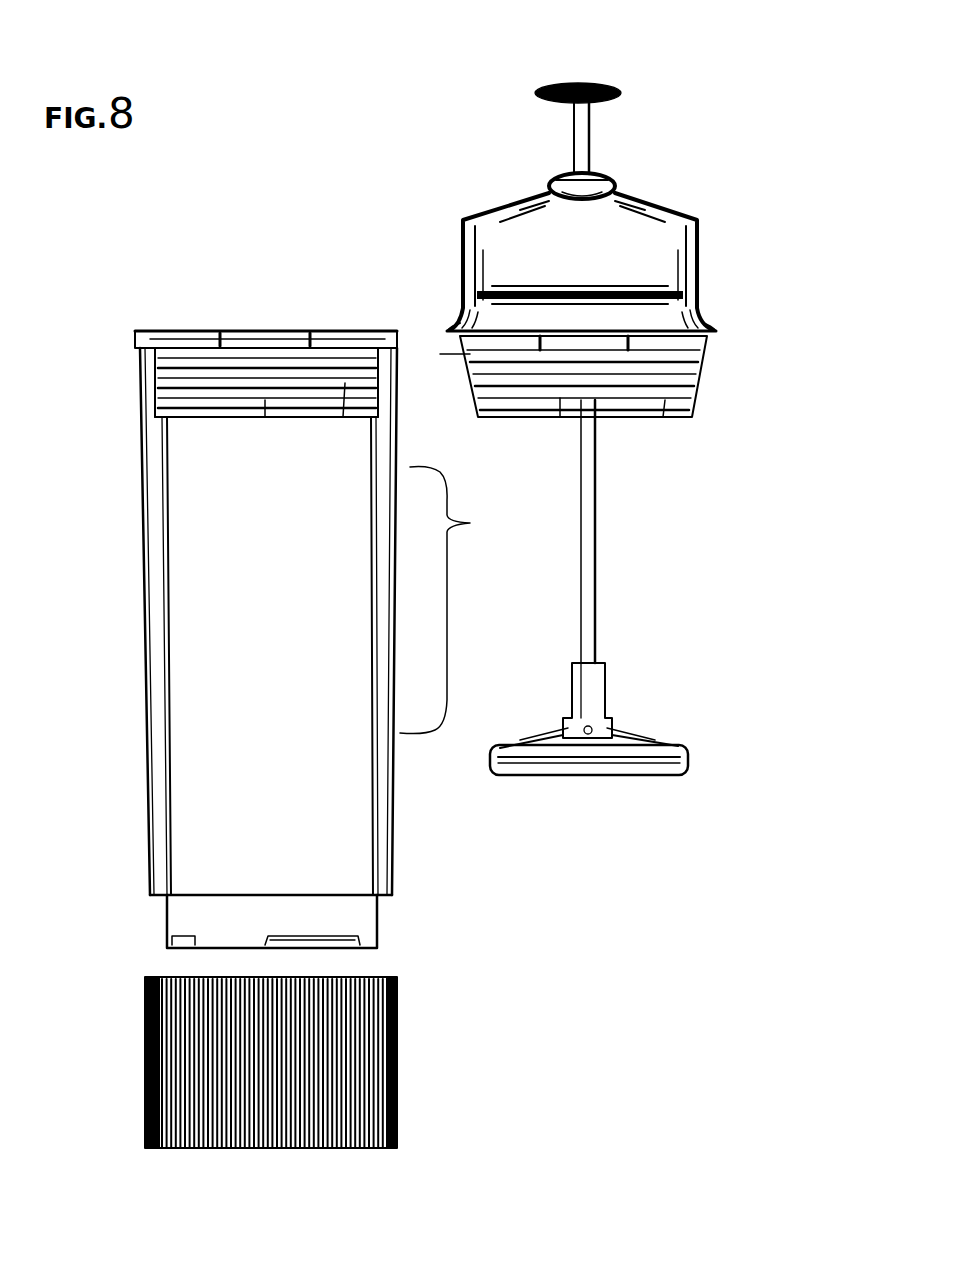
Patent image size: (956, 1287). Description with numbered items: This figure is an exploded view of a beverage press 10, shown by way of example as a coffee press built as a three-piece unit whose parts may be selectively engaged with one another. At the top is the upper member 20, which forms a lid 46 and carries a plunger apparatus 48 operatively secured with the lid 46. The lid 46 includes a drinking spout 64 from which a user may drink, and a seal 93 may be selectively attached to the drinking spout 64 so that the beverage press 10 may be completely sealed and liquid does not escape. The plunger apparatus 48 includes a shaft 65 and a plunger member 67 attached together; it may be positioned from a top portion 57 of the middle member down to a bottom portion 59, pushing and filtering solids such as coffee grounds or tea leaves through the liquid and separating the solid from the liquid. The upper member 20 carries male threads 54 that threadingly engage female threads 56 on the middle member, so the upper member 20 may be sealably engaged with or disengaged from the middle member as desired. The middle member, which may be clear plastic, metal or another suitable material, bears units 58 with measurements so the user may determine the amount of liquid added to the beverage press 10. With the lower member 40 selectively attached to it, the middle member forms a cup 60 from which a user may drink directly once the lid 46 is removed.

The beverage press 10 is at (275, 596).
The upper member 20 is at (722, 326).
The lower member 40 is at (400, 1038).
The lid 46 is at (702, 259).
The plunger apparatus 48 is at (593, 120).
The male threads 54 is at (705, 394).
The female threads 56 is at (155, 393).
The top portion 57 is at (145, 329).
The units 58 is at (416, 600).
The bottom portion 59 is at (383, 900).
The cup 60 is at (128, 556).
The drinking spout 64 is at (556, 83).
The shaft 65 is at (600, 594).
The plunger member 67 is at (690, 753).
The seal 93 is at (622, 186).